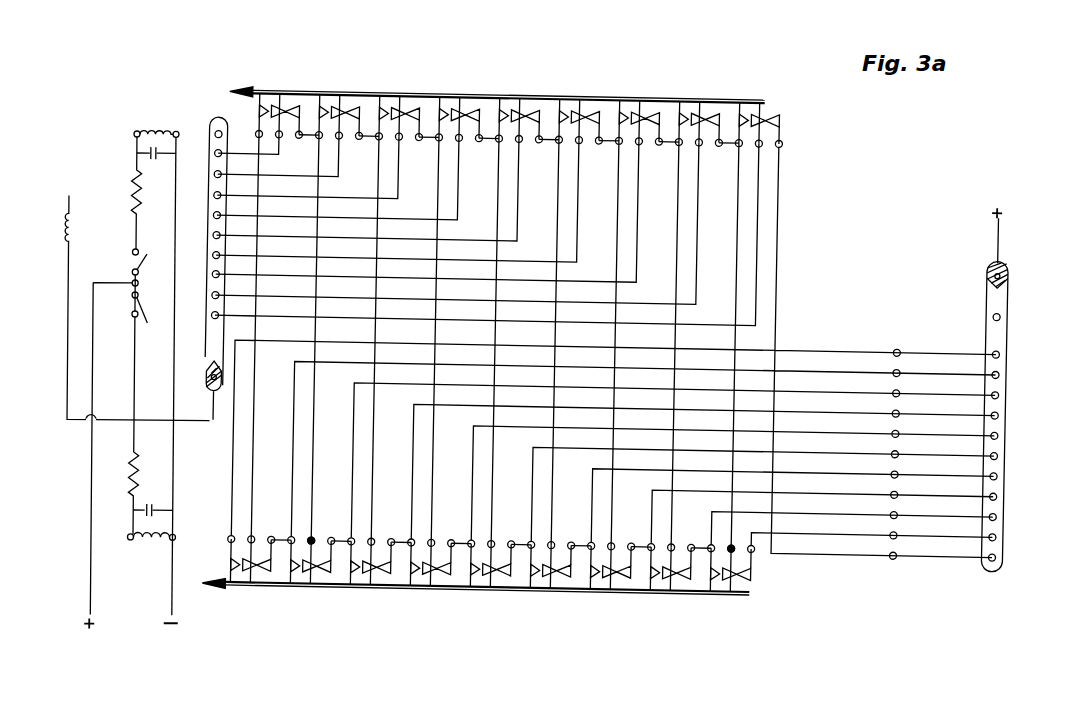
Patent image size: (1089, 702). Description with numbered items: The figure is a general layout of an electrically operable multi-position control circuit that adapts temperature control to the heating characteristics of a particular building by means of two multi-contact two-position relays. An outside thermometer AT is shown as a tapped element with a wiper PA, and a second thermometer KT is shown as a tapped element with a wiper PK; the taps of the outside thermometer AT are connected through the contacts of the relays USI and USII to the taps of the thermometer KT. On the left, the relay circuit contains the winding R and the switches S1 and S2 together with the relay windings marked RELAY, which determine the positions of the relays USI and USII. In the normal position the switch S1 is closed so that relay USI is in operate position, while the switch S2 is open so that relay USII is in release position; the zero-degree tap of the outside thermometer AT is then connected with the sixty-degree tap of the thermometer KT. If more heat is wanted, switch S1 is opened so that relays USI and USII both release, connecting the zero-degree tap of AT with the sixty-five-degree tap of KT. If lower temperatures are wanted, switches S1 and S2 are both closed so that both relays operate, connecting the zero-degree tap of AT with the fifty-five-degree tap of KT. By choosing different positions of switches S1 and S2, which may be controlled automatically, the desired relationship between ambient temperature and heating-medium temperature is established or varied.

The outside thermometer AT is at (206, 224).
The wiper of tap selector AT PA is at (202, 390).
The relay USI is at (496, 60).
The relay USII is at (498, 624).
The thermometer KT is at (966, 368).
The wiper of angle selector KT PK is at (983, 275).
The relay coil / inductor R is at (138, 307).
The switch S1 is at (146, 262).
The switch S2 is at (146, 307).
The relay with coil, resistor and capacitor RELAY is at (146, 357).